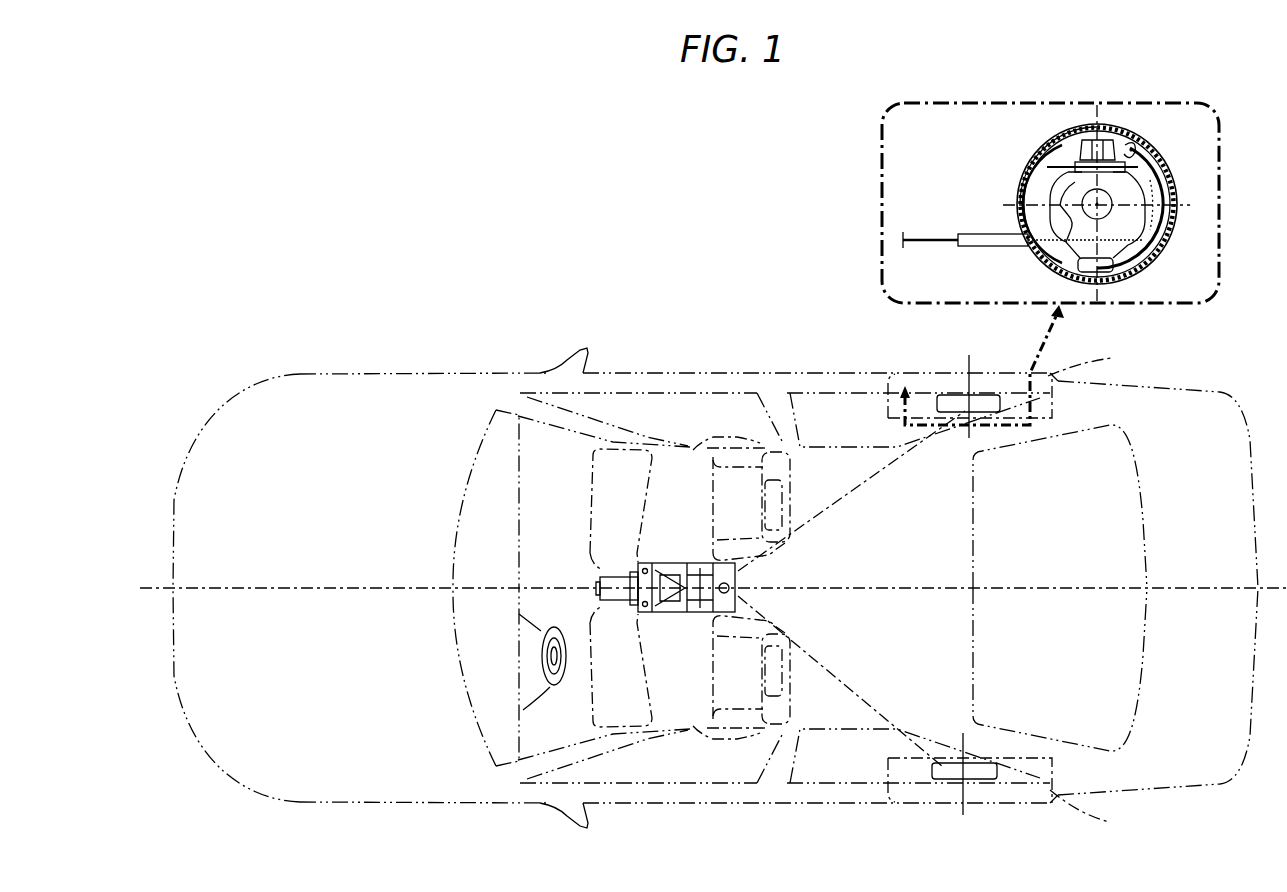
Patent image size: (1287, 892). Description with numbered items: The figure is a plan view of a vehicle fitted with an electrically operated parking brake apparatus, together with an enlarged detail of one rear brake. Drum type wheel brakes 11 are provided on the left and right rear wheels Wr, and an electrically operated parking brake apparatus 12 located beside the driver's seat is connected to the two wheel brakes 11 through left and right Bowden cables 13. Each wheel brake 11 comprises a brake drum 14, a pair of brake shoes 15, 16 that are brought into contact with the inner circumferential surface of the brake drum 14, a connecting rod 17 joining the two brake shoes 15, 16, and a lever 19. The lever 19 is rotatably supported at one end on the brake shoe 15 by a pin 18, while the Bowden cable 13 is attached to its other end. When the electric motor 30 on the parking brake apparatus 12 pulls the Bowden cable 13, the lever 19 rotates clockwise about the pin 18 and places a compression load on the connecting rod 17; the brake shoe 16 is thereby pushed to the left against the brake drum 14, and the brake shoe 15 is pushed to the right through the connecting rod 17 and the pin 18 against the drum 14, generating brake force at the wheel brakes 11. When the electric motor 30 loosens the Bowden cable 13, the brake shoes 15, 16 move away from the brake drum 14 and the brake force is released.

The wheel brake 11 is at (953, 398).
The electrically operated parking brake apparatus 12 is at (669, 620).
The Bowden cable 13 is at (841, 494).
The brake drum 14 is at (1037, 162).
The brake shoe 15 is at (1138, 263).
The brake shoe 16 is at (1062, 267).
The connecting rod 17 is at (1080, 136).
The pin 18 is at (1134, 152).
The lever 19 is at (1186, 213).
The electric motor 30 is at (618, 601).
The rear wheel Wr is at (1102, 591).